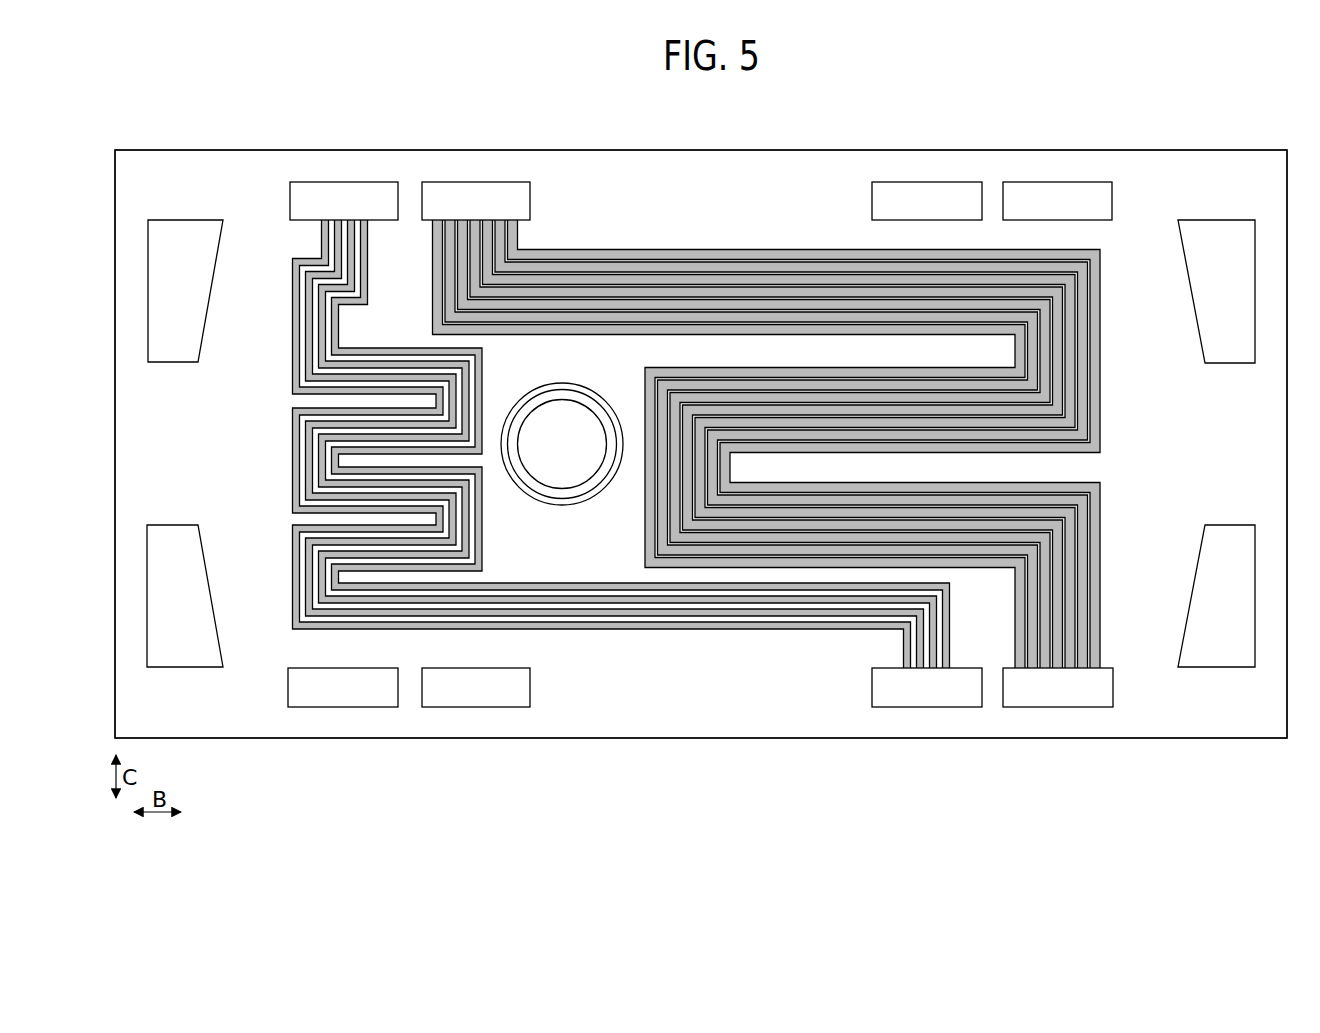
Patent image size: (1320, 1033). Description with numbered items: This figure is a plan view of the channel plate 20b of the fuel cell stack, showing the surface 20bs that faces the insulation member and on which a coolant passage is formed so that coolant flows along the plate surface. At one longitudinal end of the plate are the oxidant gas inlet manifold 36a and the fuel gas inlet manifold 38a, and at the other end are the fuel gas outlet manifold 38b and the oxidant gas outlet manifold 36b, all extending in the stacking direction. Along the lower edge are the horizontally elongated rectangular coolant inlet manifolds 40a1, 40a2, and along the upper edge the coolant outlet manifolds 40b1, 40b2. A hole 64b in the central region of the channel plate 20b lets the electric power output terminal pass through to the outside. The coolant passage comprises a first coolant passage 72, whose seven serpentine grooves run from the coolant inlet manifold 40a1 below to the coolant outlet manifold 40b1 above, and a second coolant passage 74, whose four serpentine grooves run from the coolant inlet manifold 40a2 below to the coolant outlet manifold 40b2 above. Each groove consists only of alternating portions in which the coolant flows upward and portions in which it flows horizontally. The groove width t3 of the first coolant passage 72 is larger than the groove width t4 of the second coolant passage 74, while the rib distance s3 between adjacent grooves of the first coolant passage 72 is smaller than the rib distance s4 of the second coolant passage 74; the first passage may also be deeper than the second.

The channel plate 20b is at (996, 120).
The surface of the channel plate 20bs is at (627, 192).
The oxidant gas inlet manifold 36a is at (1215, 233).
The oxidant gas outlet manifold 36b is at (187, 655).
The fuel gas inlet manifold 38a is at (1215, 653).
The fuel gas outlet manifold 38b is at (187, 232).
The coolant inlet manifold 40a1 is at (1108, 202).
The coolant inlet manifold 40a2 is at (878, 200).
The coolant outlet manifold 40b1 is at (523, 193).
The coolant outlet manifold 40b2 is at (298, 197).
The hole 64b is at (573, 408).
The first coolant passage 72 is at (1103, 568).
The second coolant passage 74 is at (287, 560).
The rib distance between adjacent first coolant passage grooves s3 is at (474, 219).
The width of first coolant passage groove t3 is at (520, 219).
The rib distance between adjacent second coolant passage grooves s4 is at (336, 219).
The width of second coolant passage groove t4 is at (367, 219).